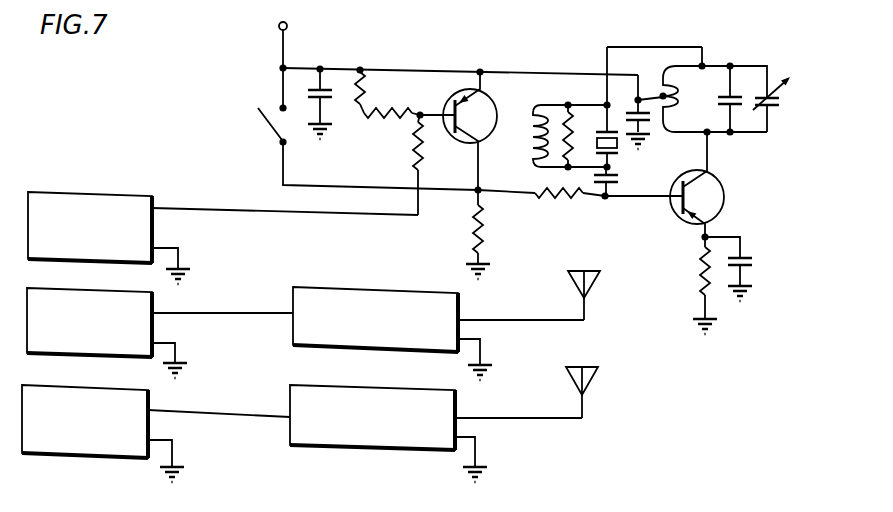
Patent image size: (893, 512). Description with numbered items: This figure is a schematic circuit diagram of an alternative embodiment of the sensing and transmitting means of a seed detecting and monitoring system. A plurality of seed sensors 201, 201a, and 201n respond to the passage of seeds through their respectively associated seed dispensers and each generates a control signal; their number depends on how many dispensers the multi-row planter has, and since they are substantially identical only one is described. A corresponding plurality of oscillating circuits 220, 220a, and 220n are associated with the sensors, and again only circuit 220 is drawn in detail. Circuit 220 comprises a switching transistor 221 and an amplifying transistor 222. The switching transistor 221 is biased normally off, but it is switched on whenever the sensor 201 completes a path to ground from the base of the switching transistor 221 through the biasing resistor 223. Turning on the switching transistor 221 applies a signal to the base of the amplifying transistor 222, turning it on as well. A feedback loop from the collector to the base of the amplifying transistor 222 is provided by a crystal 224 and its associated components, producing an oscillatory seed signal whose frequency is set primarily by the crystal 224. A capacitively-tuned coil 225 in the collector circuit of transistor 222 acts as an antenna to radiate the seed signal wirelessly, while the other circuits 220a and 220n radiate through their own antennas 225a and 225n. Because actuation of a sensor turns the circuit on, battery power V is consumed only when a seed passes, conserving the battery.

The seed sensor 201 is at (155, 220).
The seed sensor 201a is at (154, 326).
The seed sensor 201n is at (150, 430).
The oscillating circuit 220 is at (477, 167).
The oscillating circuit 220a is at (382, 298).
The oscillating circuit 220n is at (358, 451).
The switching transistor 221 is at (458, 142).
The amplifying transistor 222 is at (724, 194).
The biasing resistor 223 is at (412, 150).
The crystal 224 is at (622, 151).
The capacitively-tuned coil 225 is at (672, 64).
The antenna 225a is at (601, 279).
The antenna 225n is at (598, 374).